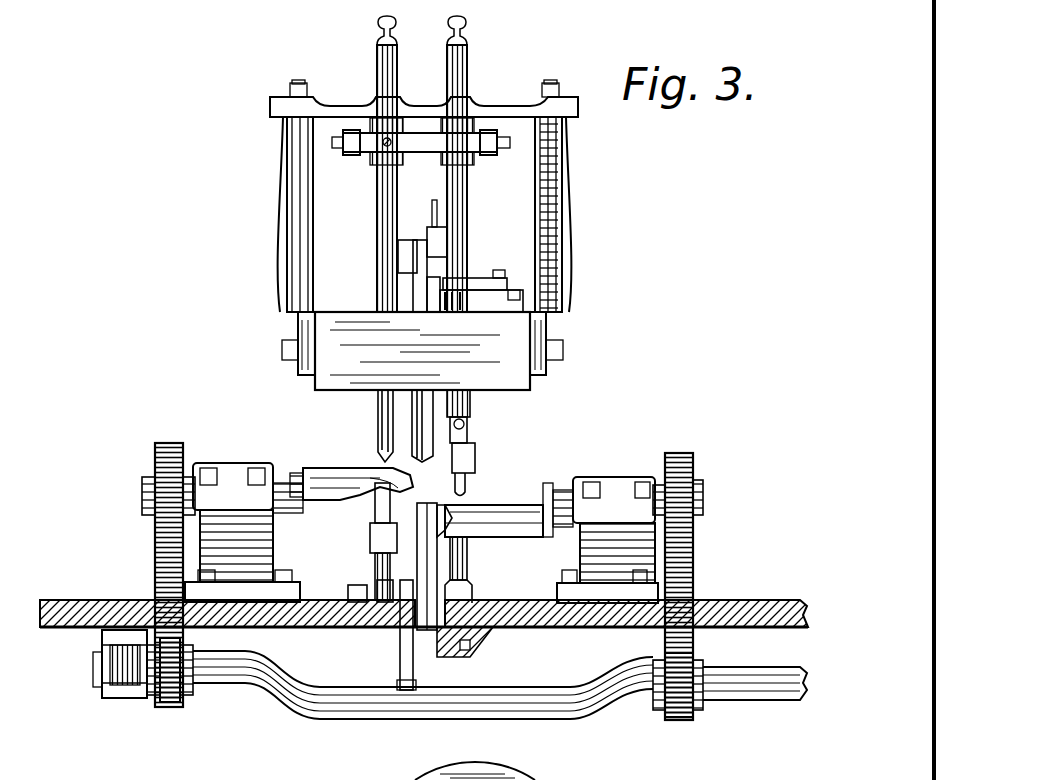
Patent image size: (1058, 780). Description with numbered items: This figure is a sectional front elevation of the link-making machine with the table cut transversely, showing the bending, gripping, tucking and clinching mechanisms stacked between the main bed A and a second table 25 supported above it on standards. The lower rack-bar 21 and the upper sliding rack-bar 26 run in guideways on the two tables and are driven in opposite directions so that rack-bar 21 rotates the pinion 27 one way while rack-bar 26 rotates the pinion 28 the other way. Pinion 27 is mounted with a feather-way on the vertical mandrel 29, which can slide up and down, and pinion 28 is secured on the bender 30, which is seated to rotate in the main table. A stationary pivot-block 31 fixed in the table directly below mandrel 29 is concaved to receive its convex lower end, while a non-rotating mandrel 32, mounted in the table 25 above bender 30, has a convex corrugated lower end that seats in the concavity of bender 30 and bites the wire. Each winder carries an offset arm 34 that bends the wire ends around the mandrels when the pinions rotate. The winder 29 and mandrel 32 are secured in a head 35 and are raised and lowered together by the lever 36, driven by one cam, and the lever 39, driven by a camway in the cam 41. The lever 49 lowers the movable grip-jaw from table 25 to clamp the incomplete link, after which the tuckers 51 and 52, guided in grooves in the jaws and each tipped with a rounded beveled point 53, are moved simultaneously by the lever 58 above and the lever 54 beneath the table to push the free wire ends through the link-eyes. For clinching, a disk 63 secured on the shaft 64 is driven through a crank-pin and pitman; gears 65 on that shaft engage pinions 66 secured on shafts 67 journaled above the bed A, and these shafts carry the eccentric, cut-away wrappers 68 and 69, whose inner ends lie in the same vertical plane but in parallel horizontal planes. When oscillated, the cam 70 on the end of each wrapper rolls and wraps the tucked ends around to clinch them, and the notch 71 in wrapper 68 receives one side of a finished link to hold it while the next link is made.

The rack-bar 21 is at (355, 605).
The second table 25 is at (422, 351).
The sliding rack-bar 26 is at (481, 315).
The pinion 27 is at (462, 292).
The pinion 28 is at (385, 605).
The vertical mandrel 29 is at (473, 229).
The bender 30 is at (377, 558).
The stationary pivot-block 31 is at (468, 570).
The non-rotating mandrel 32 is at (372, 239).
The arm 34 is at (362, 518).
The head 35 is at (421, 141).
The lever 36 is at (345, 155).
The lever 39 is at (486, 162).
The cam 41 is at (427, 566).
The lever 49 is at (419, 345).
The tucker 51 is at (502, 438).
The tucker 52 is at (400, 656).
The rounded and beveled point 53 is at (470, 477).
The lever 54 is at (465, 650).
The lever 58 is at (447, 225).
The disk 63 is at (120, 677).
The shaft 64 is at (500, 689).
The gear 65 is at (170, 703).
The pinion 66 is at (423, 581).
The shaft 67 is at (422, 502).
The wrapper 68 is at (490, 521).
The wrapper 69 is at (351, 475).
The cam 70 is at (413, 472).
The notch 71 is at (495, 540).
The bed A is at (424, 602).